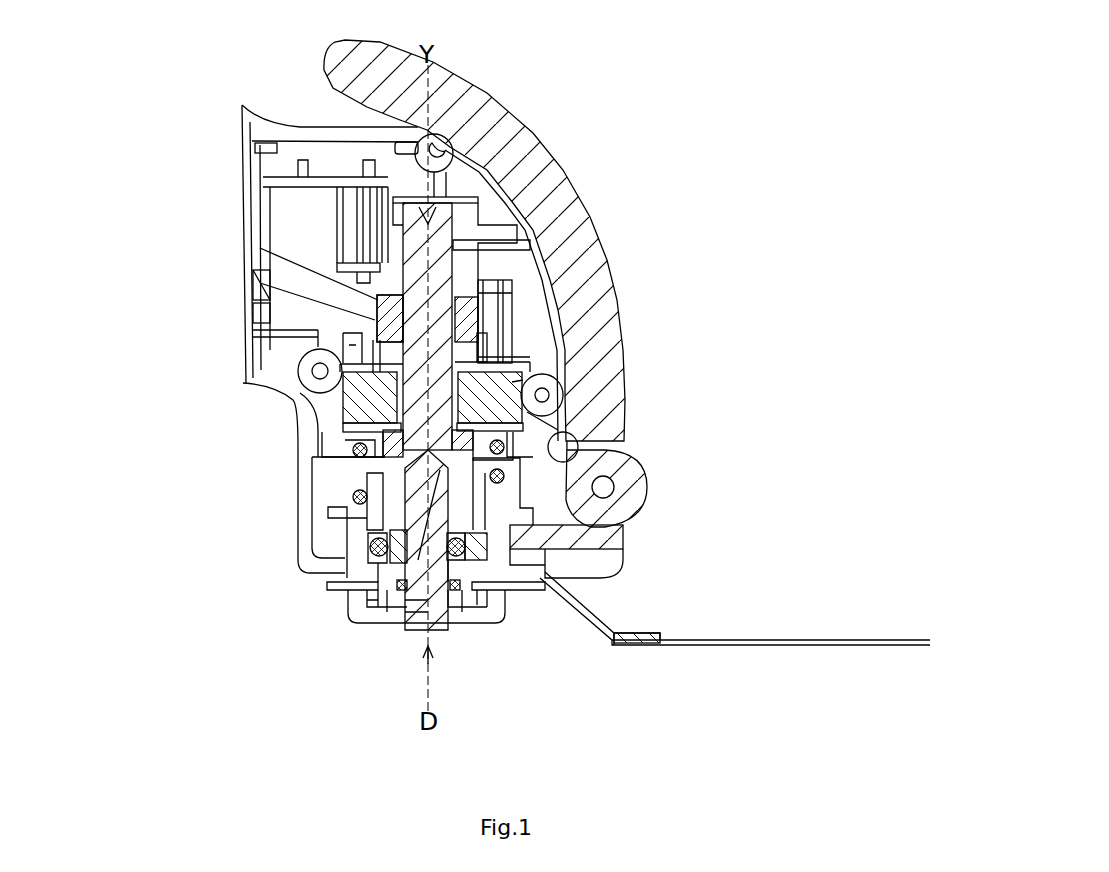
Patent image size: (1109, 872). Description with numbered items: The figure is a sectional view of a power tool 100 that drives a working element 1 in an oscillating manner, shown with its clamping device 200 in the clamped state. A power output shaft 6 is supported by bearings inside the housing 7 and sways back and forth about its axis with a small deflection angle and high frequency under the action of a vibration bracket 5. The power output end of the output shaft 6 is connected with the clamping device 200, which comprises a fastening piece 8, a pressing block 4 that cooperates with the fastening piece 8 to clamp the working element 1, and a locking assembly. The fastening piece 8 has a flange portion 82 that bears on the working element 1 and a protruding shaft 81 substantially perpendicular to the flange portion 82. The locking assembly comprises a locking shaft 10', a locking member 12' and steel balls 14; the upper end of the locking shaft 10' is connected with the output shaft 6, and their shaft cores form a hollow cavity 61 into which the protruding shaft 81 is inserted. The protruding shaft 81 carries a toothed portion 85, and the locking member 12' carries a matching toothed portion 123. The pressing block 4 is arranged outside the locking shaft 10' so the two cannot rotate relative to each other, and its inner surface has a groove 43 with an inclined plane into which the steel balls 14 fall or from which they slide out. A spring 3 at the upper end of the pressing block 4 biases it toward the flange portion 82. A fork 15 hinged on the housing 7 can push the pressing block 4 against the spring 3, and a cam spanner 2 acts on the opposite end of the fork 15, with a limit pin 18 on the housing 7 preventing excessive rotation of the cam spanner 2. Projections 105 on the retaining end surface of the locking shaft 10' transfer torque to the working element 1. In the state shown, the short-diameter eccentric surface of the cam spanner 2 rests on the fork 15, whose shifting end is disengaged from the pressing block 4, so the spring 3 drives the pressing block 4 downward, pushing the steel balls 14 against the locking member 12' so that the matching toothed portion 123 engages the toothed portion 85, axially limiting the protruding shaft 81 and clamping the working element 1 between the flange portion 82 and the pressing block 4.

The power tool 100 is at (153, 193).
The clamping device 200 is at (268, 623).
The working element 1 is at (657, 645).
The cam spanner 2 is at (533, 147).
The spring 3 is at (560, 405).
The pressing block 4 is at (540, 505).
The vibration bracket 5 is at (475, 310).
The power output shaft 6 is at (463, 282).
The housing 7 is at (293, 393).
The fastening piece 8 is at (473, 620).
The locking shaft 10' is at (613, 467).
The locking member 12' is at (441, 583).
The steel balls 14 is at (560, 560).
The fork 15 is at (545, 538).
The limit pin 18 is at (560, 447).
The groove 43 is at (352, 563).
The hollow cavity 61 is at (443, 480).
The protruding shaft 81 is at (420, 600).
The flange portion 82 is at (493, 607).
The toothed portion 85 is at (440, 525).
The projections 105 is at (388, 590).
The matching toothed portion 123 is at (445, 543).